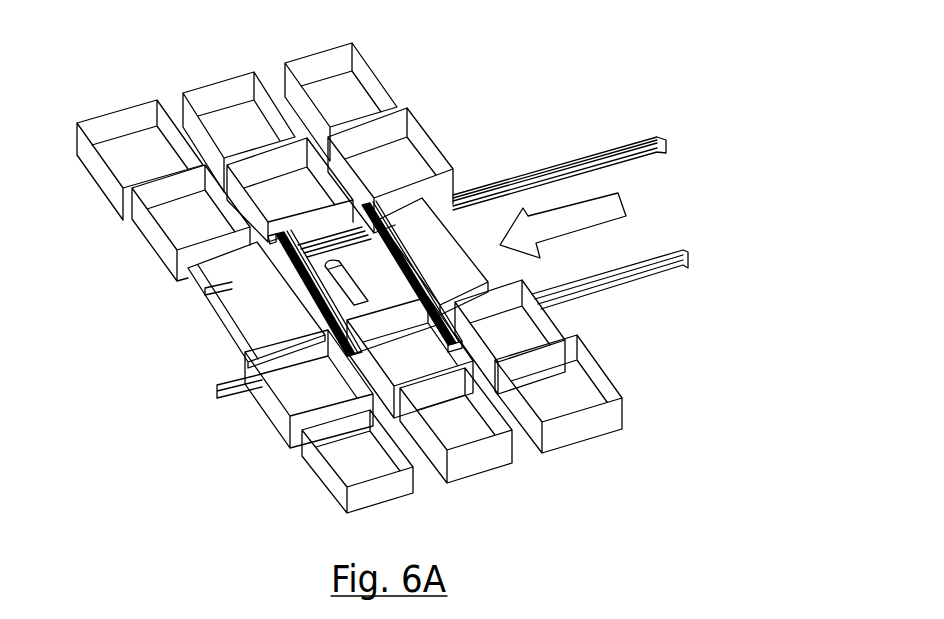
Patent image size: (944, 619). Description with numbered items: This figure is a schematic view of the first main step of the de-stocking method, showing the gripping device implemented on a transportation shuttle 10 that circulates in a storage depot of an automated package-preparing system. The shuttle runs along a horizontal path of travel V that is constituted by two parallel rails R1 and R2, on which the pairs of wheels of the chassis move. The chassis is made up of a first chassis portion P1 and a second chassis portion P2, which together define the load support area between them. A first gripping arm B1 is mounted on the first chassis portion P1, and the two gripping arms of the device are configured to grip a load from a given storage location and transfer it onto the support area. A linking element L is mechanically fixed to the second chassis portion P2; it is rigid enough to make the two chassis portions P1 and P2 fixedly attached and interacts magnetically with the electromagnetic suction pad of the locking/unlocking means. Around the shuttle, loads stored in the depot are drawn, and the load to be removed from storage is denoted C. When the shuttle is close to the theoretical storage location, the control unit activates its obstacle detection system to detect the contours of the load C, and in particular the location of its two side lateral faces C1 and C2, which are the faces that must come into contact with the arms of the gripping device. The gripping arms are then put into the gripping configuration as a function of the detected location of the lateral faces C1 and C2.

The transportation shuttle 10 is at (303, 212).
The first gripping arm B1 is at (393, 222).
The first chassis portion P1 is at (430, 247).
The second chassis portion P2 is at (228, 286).
The first rail R1 is at (667, 273).
The second rail R2 is at (647, 136).
The path of travel V is at (731, 188).
The linking element L is at (397, 303).
The load C is at (427, 362).
The first lateral face C1 is at (465, 344).
The second lateral face C2 is at (358, 378).